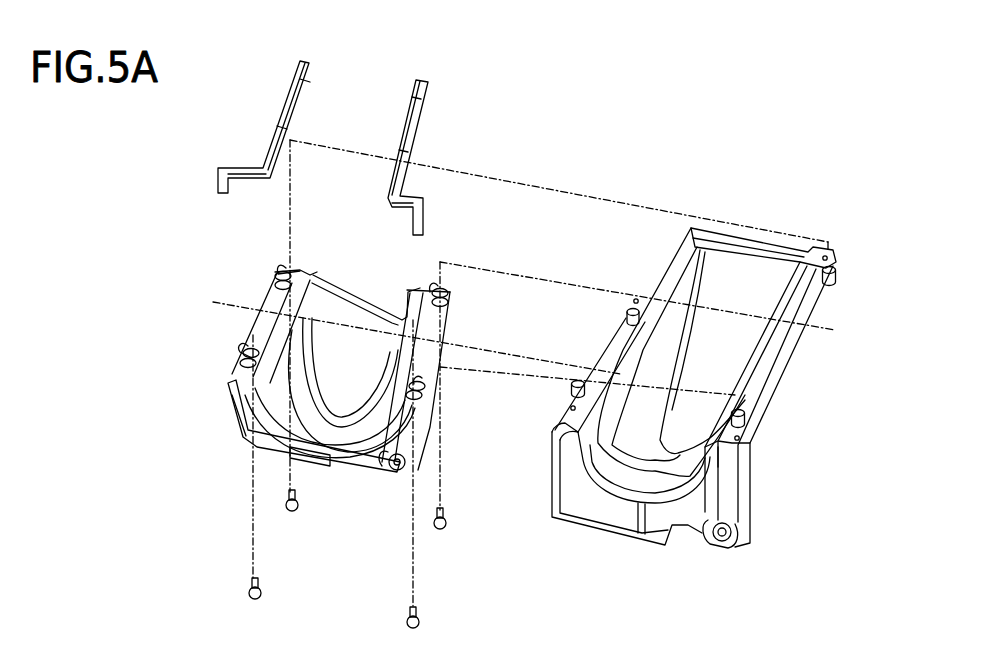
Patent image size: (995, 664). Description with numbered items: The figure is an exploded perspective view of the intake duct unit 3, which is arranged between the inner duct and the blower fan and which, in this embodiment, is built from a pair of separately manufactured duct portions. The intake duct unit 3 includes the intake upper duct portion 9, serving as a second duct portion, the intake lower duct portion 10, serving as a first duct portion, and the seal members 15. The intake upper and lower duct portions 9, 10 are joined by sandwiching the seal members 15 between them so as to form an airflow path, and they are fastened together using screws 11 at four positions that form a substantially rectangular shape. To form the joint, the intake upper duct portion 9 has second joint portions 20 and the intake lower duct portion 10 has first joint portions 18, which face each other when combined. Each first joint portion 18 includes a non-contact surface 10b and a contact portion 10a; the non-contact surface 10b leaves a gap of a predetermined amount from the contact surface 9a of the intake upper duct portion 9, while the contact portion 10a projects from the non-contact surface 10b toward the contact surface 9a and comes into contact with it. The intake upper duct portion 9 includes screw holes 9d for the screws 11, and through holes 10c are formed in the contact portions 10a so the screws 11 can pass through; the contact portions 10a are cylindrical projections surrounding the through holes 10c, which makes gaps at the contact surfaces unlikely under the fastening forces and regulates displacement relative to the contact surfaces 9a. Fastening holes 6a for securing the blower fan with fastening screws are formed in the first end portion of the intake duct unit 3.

The intake duct unit 3 is at (644, 118).
The seal member 15 is at (306, 62).
The intake lower duct portion 10 is at (360, 323).
The contact portion 10a is at (274, 280).
The non-contact surface 10b is at (307, 265).
The through hole 10c is at (290, 268).
The first joint portion 18 is at (230, 403).
The fastening hole 6a is at (396, 472).
The screw 11 is at (260, 586).
The intake upper duct portion 9 is at (741, 266).
The contact surface 9a is at (690, 230).
The screw hole 9d is at (637, 308).
The second joint portion 20 is at (733, 470).